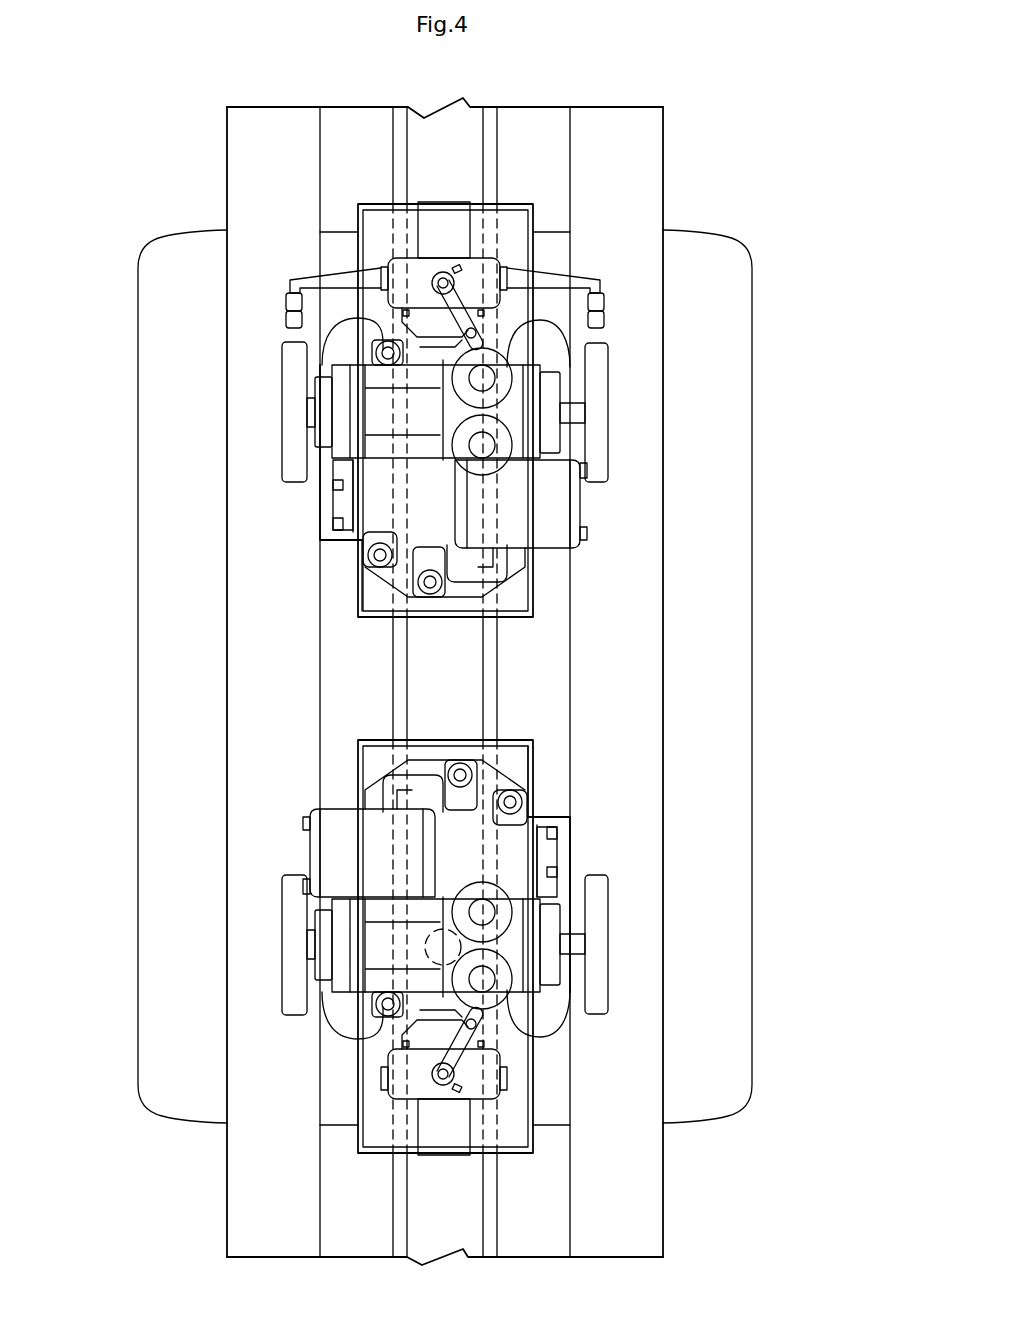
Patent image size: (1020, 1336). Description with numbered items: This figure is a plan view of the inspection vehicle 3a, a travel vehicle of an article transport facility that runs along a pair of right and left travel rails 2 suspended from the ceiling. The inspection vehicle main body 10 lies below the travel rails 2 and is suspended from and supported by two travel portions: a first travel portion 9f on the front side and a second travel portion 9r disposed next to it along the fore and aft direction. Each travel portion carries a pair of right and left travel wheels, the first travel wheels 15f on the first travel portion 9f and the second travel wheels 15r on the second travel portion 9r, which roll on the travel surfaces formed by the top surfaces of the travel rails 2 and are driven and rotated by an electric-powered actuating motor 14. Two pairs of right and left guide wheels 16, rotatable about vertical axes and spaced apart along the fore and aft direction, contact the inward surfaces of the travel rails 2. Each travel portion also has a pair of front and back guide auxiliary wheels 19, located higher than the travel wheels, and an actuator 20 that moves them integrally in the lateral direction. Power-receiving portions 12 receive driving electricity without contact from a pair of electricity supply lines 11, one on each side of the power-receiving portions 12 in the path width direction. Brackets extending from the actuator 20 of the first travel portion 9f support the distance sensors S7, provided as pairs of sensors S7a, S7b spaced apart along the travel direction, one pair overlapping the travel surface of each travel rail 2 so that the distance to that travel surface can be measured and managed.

The travel rail 2 is at (245, 660).
The inspection vehicle 3a is at (782, 569).
The first travel portion 9f is at (597, 252).
The second travel portion 9r is at (598, 1132).
The inspection vehicle main body 10 is at (158, 858).
The electricity supply line 11 is at (398, 147).
The power-receiving portion 12 is at (515, 222).
The actuating motor 14 is at (545, 537).
The first travel wheel 15f is at (288, 452).
The second travel wheel 15r is at (290, 980).
The guide wheel 16 is at (300, 348).
The guide auxiliary wheel 19 is at (497, 455).
The actuator 20 is at (443, 256).
The distance sensor S7 is at (68, 272).
The distance sensor S7a is at (286, 300).
The distance sensor S7b is at (286, 322).